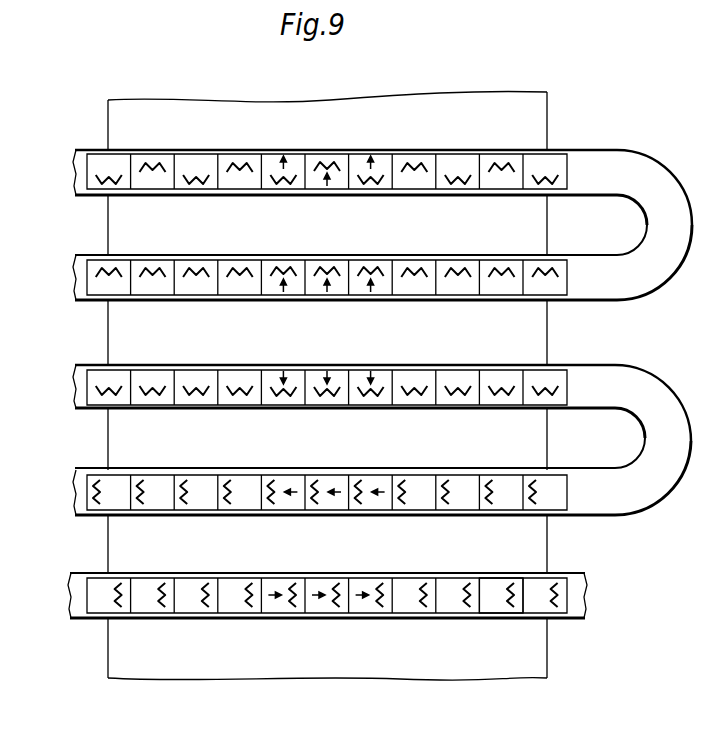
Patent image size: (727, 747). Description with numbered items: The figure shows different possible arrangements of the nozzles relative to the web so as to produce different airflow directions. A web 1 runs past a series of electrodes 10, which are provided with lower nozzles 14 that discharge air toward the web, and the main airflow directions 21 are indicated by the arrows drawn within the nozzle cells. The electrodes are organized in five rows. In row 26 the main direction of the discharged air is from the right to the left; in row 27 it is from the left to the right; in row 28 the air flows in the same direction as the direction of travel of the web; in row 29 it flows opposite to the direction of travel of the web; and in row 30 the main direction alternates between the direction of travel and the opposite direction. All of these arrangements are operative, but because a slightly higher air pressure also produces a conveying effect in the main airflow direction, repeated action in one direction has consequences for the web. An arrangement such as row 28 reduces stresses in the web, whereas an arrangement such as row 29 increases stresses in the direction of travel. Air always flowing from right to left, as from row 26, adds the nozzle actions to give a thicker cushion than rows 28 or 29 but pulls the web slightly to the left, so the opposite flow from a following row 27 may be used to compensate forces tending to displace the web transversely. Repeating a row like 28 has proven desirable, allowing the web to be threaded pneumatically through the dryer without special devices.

The web 1 is at (395, 665).
The electrodes 10 is at (577, 618).
The lower nozzles 14 is at (493, 600).
The main airflow directions 21 is at (322, 601).
The row 26 is at (311, 652).
The row 27 is at (362, 476).
The row 28 is at (362, 403).
The row 29 is at (364, 262).
The row 30 is at (364, 187).